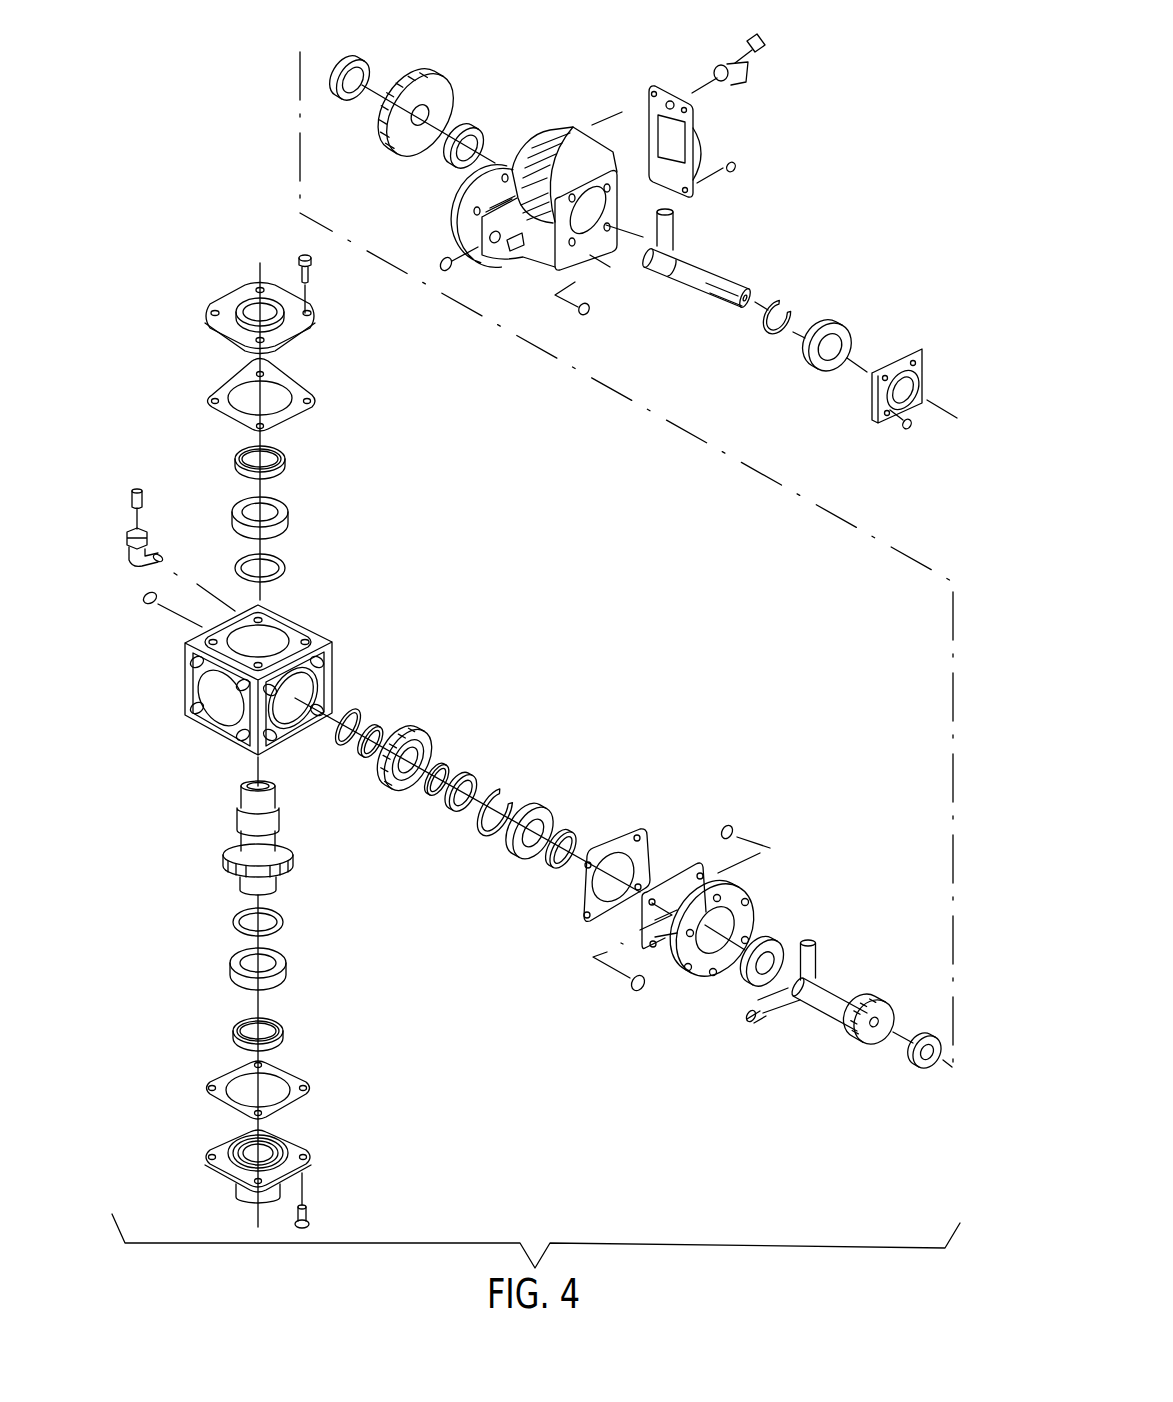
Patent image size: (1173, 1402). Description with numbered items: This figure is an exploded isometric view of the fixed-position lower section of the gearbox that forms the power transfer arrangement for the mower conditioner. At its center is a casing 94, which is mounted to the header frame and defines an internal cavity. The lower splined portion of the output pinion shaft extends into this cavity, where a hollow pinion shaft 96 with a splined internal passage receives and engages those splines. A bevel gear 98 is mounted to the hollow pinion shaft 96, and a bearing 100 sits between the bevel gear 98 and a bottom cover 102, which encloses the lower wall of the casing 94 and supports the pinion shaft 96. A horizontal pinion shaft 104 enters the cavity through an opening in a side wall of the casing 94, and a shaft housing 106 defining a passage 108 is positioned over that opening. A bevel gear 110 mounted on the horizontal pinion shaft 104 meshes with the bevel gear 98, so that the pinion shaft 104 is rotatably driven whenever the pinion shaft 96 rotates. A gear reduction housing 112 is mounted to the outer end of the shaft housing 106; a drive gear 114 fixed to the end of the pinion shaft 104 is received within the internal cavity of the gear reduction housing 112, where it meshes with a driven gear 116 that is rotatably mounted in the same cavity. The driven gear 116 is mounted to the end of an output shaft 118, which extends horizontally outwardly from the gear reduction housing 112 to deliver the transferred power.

The casing 94 is at (202, 726).
The hollow pinion shaft 96 is at (223, 855).
The bevel gear 98 is at (292, 855).
The bearing 100 is at (230, 968).
The bottom cover 102 is at (213, 1178).
The horizontal pinion shaft 104 is at (838, 990).
The shaft housing 106 is at (753, 897).
The passage 108 is at (707, 957).
The bevel gear 110 is at (412, 730).
The gear reduction housing 112 is at (557, 133).
The drive gear 114 is at (878, 1003).
The driven gear 116 is at (423, 70).
The output shaft 118 is at (690, 292).